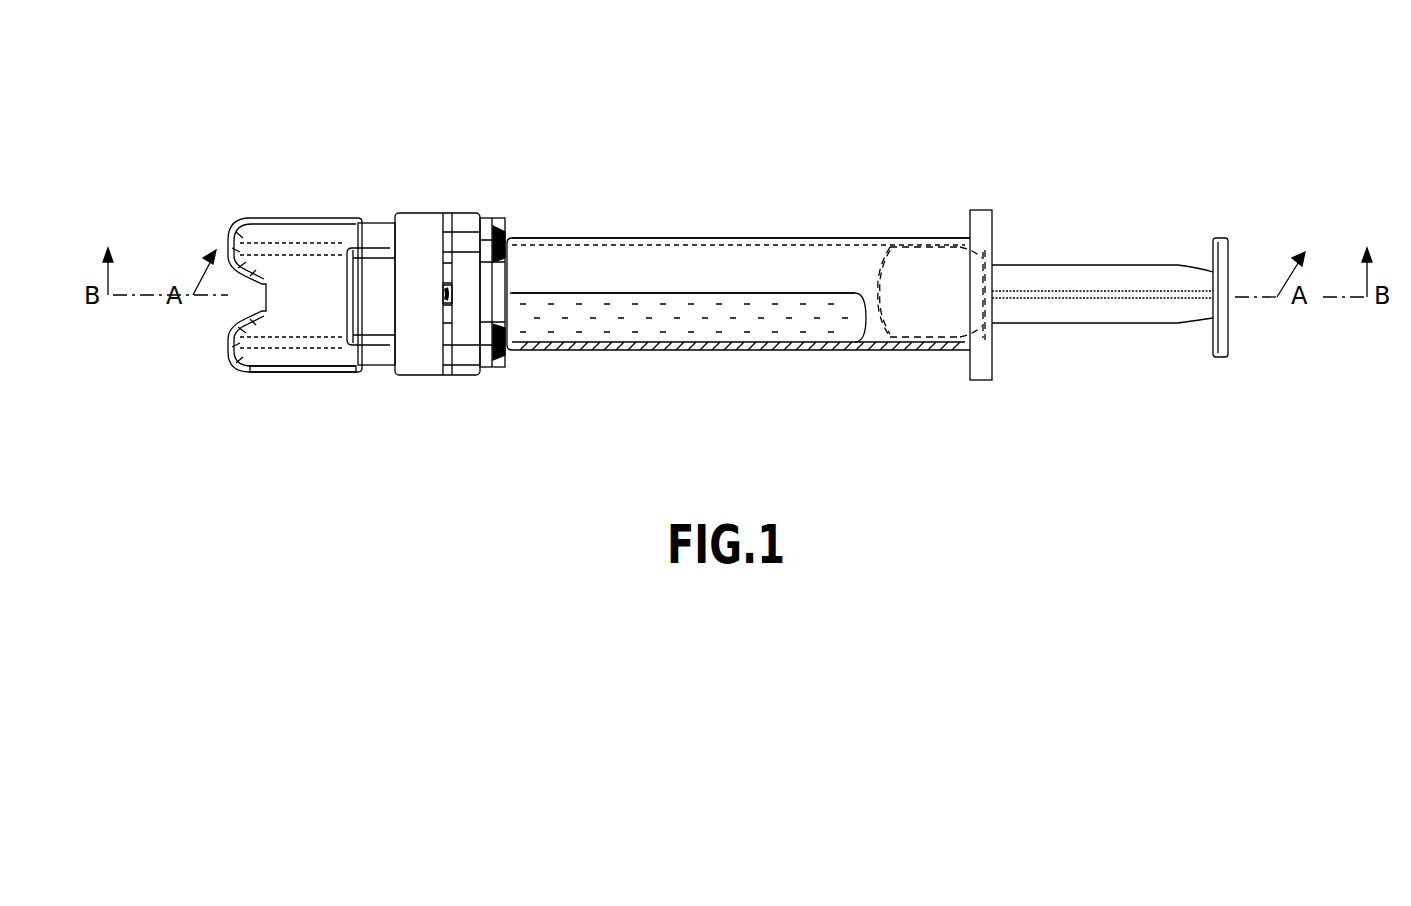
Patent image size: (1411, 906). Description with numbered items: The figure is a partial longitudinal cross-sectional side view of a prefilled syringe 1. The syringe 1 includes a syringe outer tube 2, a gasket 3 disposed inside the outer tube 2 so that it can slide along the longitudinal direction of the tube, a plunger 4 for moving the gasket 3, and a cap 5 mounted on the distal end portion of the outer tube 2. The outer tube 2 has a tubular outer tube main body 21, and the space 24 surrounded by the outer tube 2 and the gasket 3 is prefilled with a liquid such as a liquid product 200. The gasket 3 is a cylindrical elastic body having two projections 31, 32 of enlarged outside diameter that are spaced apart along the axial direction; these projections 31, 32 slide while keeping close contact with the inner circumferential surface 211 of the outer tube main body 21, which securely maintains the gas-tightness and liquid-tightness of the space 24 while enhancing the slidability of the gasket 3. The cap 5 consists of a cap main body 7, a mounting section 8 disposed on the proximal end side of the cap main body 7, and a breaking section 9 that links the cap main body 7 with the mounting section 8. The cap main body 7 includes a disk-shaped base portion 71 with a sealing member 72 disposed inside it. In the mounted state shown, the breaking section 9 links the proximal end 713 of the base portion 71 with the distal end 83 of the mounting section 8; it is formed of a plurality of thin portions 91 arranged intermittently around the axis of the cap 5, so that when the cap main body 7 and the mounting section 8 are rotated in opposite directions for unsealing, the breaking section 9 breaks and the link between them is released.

The syringe 1 is at (1022, 128).
The syringe outer tube 2 is at (628, 222).
The outer tube main body 21 is at (713, 238).
The space 24 is at (668, 323).
The liquid product 200 is at (733, 323).
The inner circumferential surface 211 is at (790, 340).
The gasket 3 is at (996, 334).
The projection 31 is at (903, 350).
The projection 32 is at (957, 350).
The plunger 4 is at (1152, 330).
The cap 5 is at (482, 116).
The cap main body 7 is at (343, 235).
The base portion 71 is at (380, 345).
The sealing member 72 is at (305, 353).
The proximal end 713 is at (447, 292).
The mounting section 8 is at (460, 240).
The distal end 83 is at (490, 360).
The breaking section 9 is at (440, 205).
The thin portion 91 is at (460, 245).